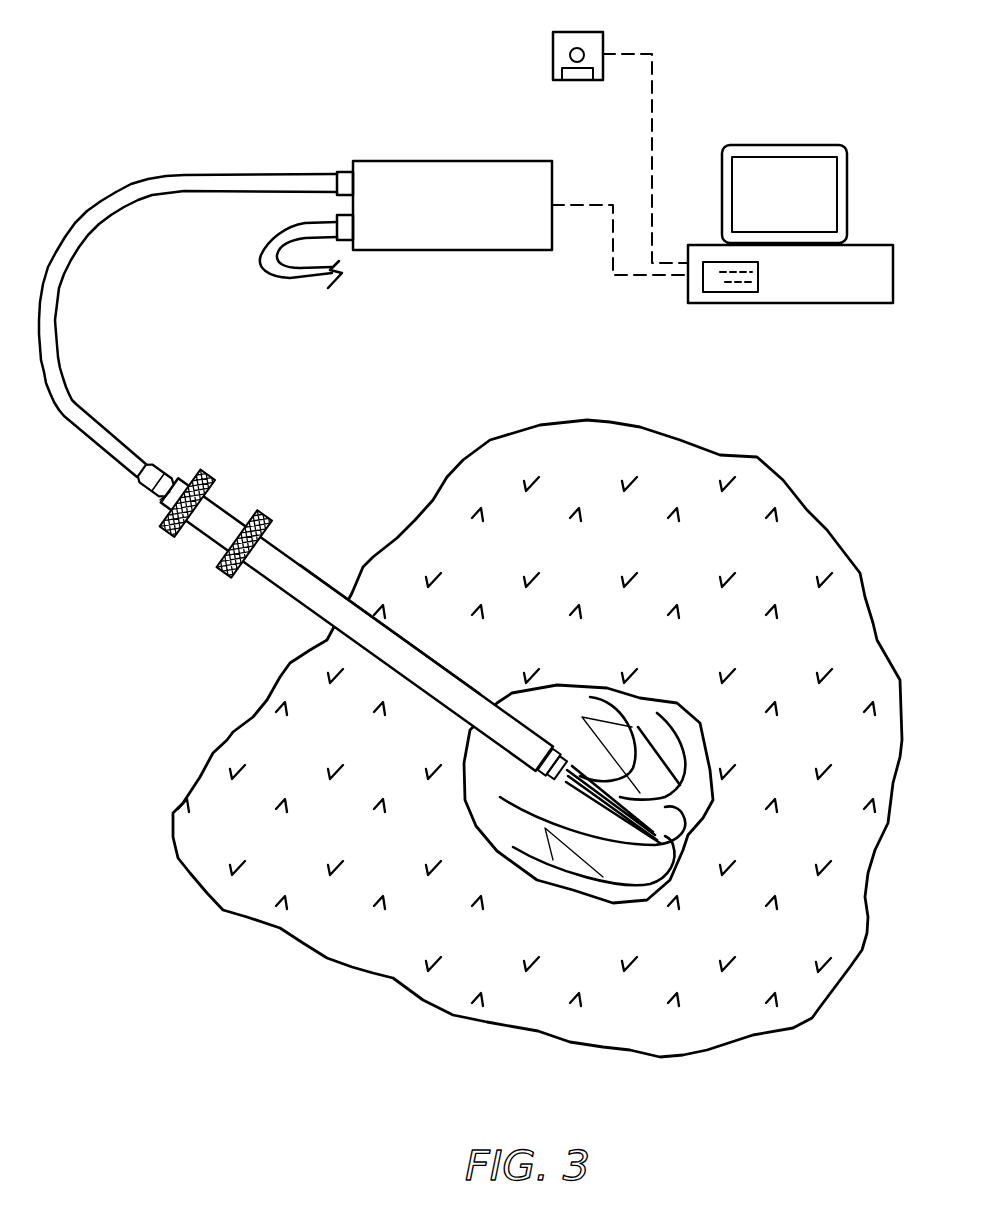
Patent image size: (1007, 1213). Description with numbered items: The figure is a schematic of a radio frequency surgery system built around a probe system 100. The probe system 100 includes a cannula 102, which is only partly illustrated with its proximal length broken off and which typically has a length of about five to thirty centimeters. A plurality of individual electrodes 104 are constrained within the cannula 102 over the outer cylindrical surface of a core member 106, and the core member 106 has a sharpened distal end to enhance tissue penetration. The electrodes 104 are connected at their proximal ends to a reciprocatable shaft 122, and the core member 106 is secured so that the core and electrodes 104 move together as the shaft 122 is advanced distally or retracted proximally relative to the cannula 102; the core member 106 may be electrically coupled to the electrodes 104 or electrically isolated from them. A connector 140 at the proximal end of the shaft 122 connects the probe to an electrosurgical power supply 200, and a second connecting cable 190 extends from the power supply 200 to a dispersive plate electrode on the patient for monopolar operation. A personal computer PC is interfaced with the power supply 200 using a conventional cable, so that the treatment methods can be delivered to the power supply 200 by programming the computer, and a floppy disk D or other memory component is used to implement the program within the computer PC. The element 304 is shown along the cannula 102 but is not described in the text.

The probe system 100 is at (136, 544).
The cannula 102 is at (217, 523).
The electrodes 104 is at (582, 717).
The core member 106 is at (570, 807).
The reciprocatable shaft 122 is at (176, 487).
The connector 140 is at (161, 474).
The second connecting cable 190 is at (293, 273).
The electrosurgical power supply 200 is at (466, 220).
The sheath 304 is at (280, 572).
The floppy disk D is at (568, 32).
The personal computer PC is at (813, 145).